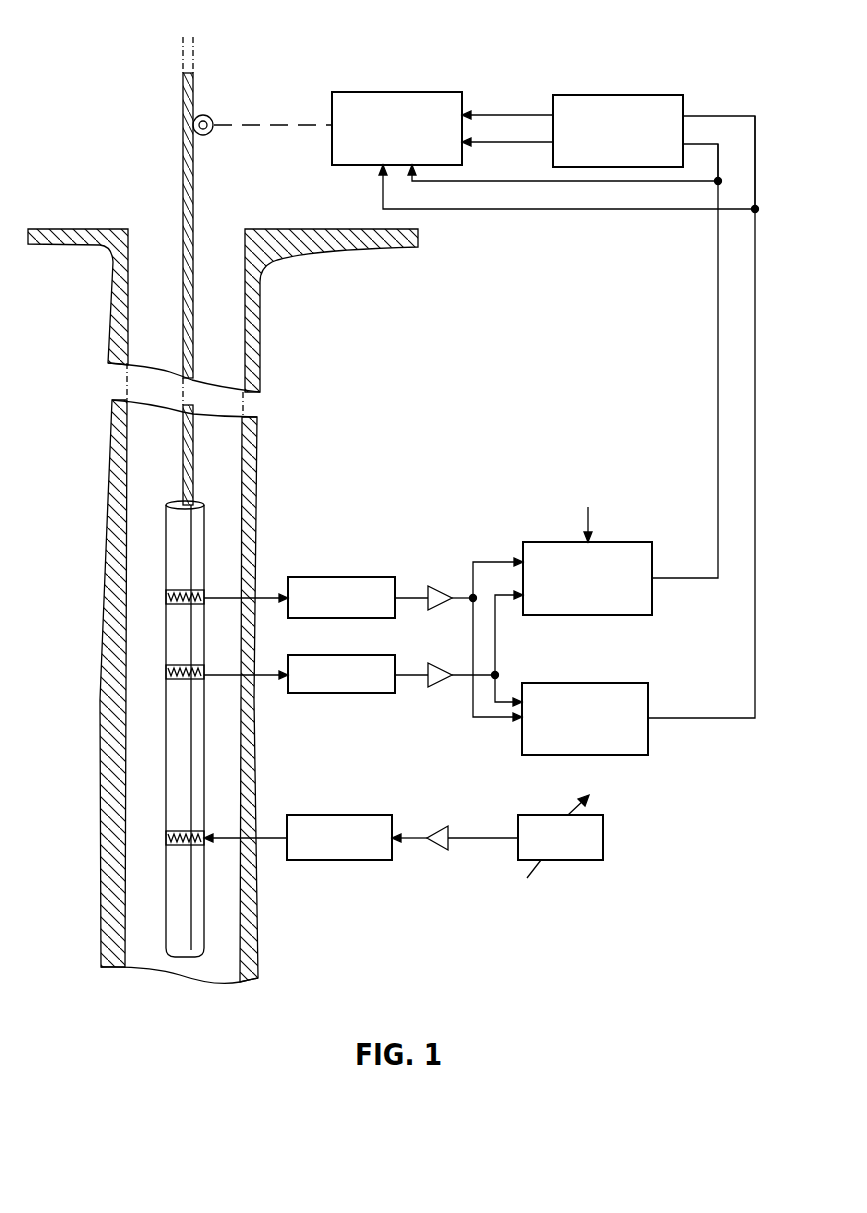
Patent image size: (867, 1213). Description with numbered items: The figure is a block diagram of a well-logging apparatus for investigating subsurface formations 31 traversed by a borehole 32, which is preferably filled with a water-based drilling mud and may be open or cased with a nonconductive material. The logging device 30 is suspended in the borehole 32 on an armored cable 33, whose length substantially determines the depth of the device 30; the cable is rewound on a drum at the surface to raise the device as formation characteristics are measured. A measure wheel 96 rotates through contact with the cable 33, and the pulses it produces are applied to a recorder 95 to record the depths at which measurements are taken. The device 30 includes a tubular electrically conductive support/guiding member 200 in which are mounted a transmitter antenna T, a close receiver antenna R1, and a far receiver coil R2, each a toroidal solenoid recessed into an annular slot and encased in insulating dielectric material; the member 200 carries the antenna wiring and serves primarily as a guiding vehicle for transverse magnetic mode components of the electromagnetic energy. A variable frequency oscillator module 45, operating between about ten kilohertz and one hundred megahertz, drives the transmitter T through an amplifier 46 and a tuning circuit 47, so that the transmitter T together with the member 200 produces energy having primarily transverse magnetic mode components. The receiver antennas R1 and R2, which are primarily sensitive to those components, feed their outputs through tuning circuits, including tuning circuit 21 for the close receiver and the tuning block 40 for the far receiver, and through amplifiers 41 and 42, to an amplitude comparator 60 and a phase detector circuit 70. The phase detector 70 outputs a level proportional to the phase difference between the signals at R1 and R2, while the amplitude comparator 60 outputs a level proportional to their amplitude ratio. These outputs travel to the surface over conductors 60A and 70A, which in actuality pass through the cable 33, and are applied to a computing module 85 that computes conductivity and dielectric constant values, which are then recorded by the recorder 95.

The subsurface formations 31 is at (72, 232).
The borehole 32 is at (160, 262).
The armored cable 33 is at (183, 325).
The measure wheel 96 is at (212, 118).
The logging device 30 is at (219, 711).
The tubular electrically conductive support/guiding member 200 is at (200, 540).
The far receiver coil R2 is at (167, 598).
The close receiver antenna R1 is at (167, 672).
The transmitter antenna T is at (166, 834).
The tuning circuit 40 is at (334, 577).
The tuning circuit 21 is at (337, 693).
The amplifier 42 is at (433, 585).
The amplifier 41 is at (441, 689).
The phase detector circuit 70 is at (640, 555).
The conductor 70A is at (675, 580).
The amplitude comparator 60 is at (640, 690).
The conductor 60A is at (697, 720).
The recorder 95 is at (415, 92).
The computing module 85 is at (605, 95).
The tuning circuit 47 is at (355, 860).
The amplifier 46 is at (445, 825).
The variable frequency oscillator module 45 is at (588, 860).